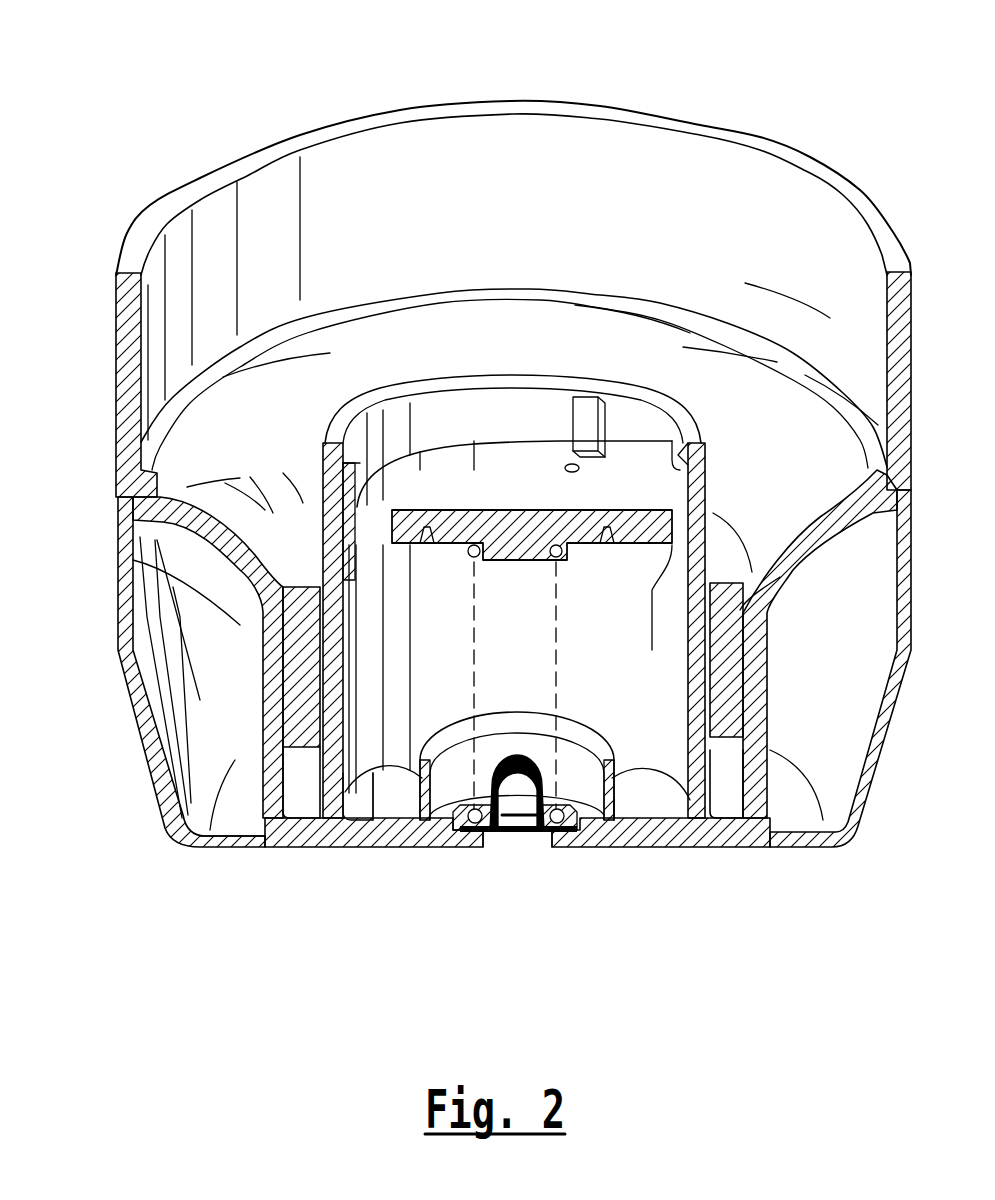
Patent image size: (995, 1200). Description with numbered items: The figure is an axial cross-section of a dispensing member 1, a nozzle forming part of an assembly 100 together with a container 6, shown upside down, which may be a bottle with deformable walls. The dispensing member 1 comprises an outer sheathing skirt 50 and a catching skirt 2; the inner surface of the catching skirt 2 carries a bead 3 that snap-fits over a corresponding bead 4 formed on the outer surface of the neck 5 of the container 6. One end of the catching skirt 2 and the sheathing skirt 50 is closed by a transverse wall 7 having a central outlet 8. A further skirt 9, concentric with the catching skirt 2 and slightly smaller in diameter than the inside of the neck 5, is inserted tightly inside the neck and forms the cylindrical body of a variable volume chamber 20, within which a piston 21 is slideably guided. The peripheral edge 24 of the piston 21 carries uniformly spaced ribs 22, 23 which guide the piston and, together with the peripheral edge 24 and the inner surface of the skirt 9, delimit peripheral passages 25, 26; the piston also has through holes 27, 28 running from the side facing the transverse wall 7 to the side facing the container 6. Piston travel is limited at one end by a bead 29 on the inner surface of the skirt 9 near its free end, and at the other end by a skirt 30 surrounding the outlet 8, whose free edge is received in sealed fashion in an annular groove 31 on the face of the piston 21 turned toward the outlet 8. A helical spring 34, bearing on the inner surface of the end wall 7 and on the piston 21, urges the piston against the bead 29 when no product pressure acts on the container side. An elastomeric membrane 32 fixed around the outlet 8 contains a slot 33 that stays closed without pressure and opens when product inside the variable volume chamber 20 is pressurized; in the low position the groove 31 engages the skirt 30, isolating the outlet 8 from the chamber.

The assembly 100 is at (300, 104).
The dispensing member 1 is at (96, 629).
The catching skirt 2 is at (230, 740).
The bead 3 is at (258, 645).
The bead 4 is at (262, 668).
The neck 5 is at (250, 762).
The container 6 is at (106, 316).
The transverse wall 7 is at (292, 852).
The outlet 8 is at (505, 842).
The skirt 9 is at (372, 795).
The variable volume chamber 20 is at (498, 623).
The piston 21 is at (632, 494).
The rib 22 is at (583, 396).
The rib 23 is at (322, 478).
The peripheral edge 24 is at (666, 546).
The peripheral passage 25 is at (474, 440).
The peripheral passage 26 is at (633, 420).
The through hole 27 is at (565, 464).
The through hole 28 is at (422, 455).
The bead 29 is at (685, 468).
The skirt 30 is at (622, 802).
The annular groove 31 is at (605, 546).
The elastomeric membrane 32 is at (480, 766).
The slot 33 is at (517, 756).
The helical spring 34 is at (560, 684).
The sheathing skirt 50 is at (255, 690).